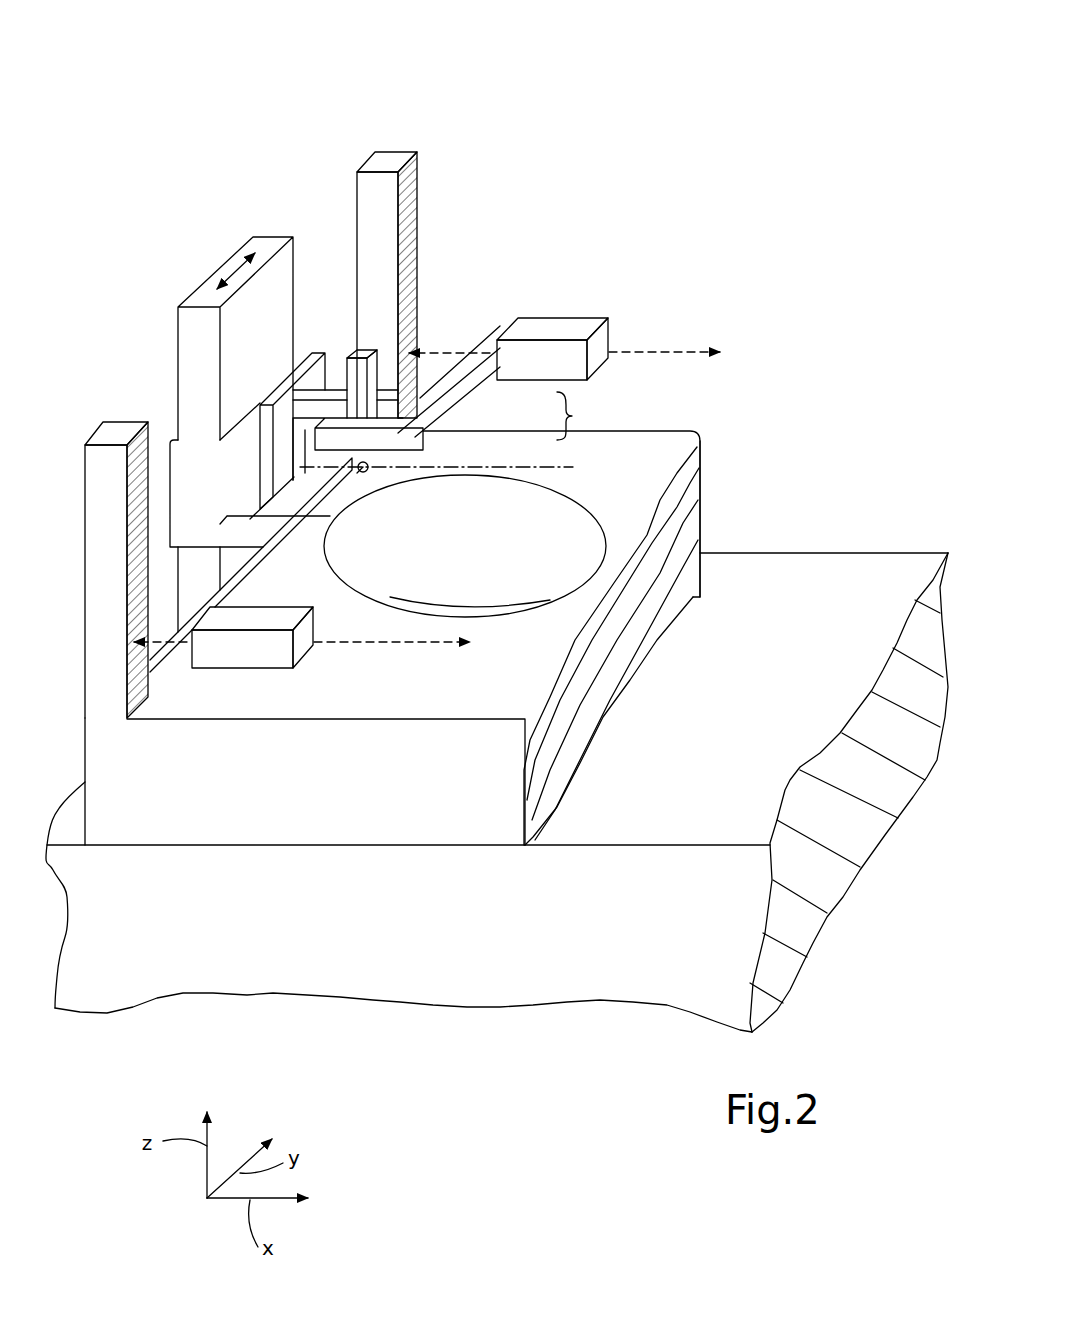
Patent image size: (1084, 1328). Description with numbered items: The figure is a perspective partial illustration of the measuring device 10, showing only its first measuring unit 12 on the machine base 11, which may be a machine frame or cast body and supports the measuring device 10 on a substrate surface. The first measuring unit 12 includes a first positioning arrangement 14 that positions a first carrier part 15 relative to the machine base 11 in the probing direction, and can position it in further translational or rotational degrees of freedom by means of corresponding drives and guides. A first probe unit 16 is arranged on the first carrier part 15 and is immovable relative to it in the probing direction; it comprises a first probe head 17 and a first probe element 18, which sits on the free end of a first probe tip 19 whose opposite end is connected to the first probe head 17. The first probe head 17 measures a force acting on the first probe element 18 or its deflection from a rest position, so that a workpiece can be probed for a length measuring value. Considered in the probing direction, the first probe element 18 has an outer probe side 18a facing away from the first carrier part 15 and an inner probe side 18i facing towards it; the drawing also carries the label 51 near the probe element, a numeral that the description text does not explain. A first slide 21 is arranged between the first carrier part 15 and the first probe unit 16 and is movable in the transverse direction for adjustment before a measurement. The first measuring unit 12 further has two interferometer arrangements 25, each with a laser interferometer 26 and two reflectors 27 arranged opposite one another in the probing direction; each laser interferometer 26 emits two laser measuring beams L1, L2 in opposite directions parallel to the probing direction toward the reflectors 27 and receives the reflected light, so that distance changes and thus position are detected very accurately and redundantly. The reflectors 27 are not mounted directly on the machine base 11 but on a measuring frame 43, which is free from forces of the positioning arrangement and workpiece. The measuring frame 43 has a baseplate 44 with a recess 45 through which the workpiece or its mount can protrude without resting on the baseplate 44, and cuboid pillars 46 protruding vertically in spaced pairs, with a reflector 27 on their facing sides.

The measuring device 10 is at (766, 152).
The machine base 11 is at (857, 557).
The first measuring unit 12 is at (291, 108).
The first positioning arrangement 14 is at (140, 240).
The first carrier part 15 is at (307, 347).
The first probe unit 16 is at (576, 416).
The first probe head 17 is at (445, 382).
The first probe element 18 is at (368, 437).
The outer probe side 18a is at (367, 470).
The inner probe side 18i is at (356, 474).
The first probe tip 19 is at (445, 418).
The first slide 21 is at (266, 383).
The interferometer arrangement 25 is at (220, 692).
The laser interferometer 26 is at (556, 330).
The reflector 27 is at (157, 430).
The measuring frame 43 is at (752, 408).
The baseplate 44 is at (707, 503).
The recess 45 is at (585, 547).
The pillar 46 is at (391, 163).
The opening 51 is at (558, 478).
The laser measuring beam L1 is at (437, 350).
The laser measuring beam L2 is at (657, 343).